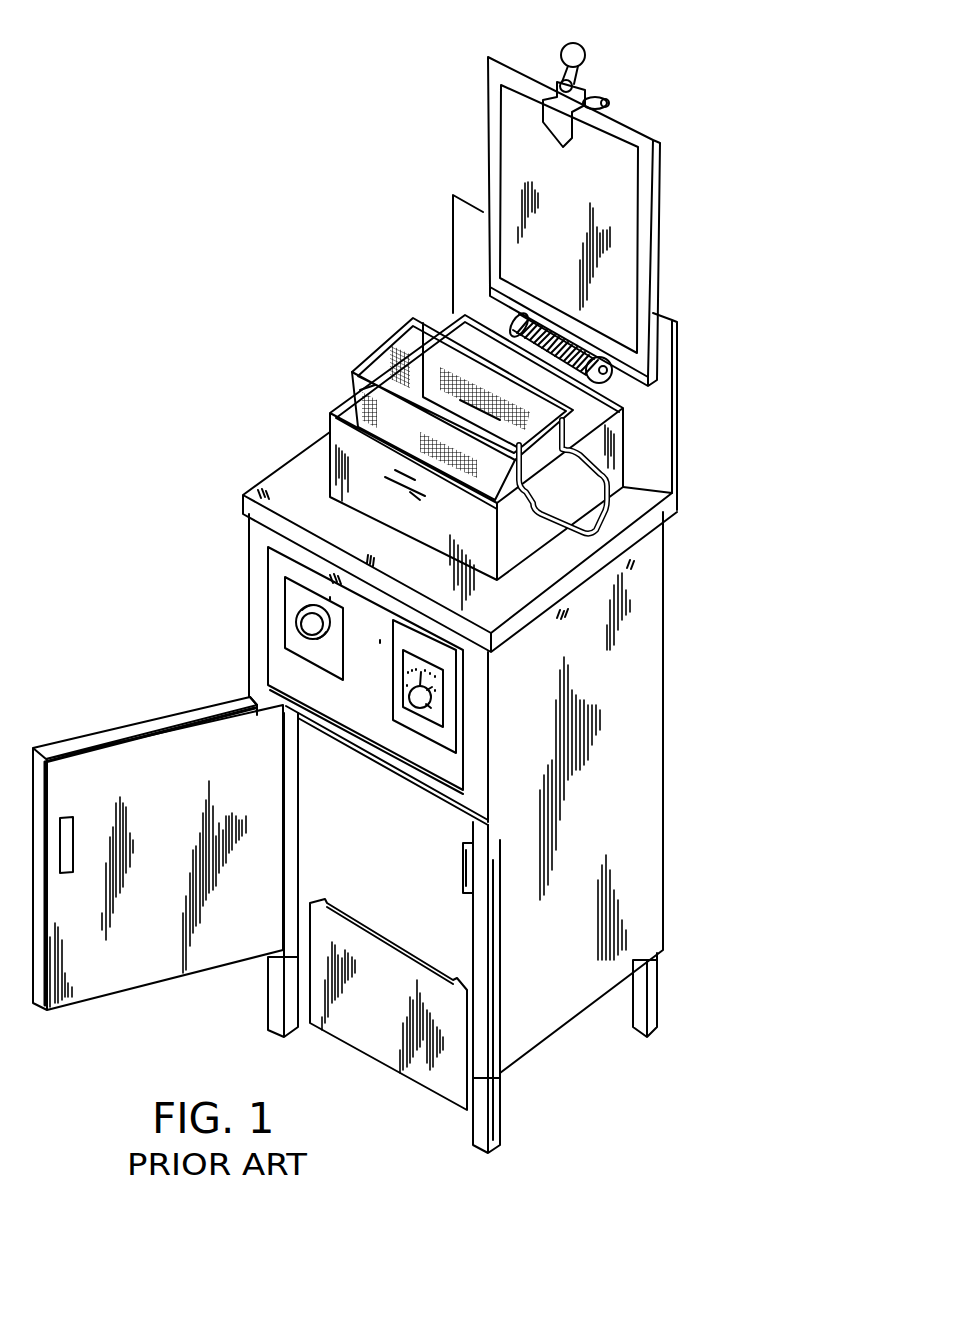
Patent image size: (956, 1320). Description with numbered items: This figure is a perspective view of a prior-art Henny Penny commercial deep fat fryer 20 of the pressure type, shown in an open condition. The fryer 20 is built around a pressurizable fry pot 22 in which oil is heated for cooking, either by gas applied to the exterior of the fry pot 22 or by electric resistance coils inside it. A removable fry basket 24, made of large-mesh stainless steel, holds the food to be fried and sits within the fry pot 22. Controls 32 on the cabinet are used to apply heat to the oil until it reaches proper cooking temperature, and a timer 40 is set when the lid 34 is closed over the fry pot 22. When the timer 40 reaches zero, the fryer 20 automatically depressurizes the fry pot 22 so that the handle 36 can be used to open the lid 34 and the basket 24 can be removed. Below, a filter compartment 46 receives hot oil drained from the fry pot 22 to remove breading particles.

The commercial deep fat fryer 20 is at (661, 575).
The fry pot 22 is at (618, 455).
The fry basket 24 is at (365, 360).
The controls 32 is at (437, 712).
The lid 34 is at (652, 230).
The handle 36 is at (586, 50).
The timer 40 is at (292, 618).
The filter compartment 46 is at (447, 1083).